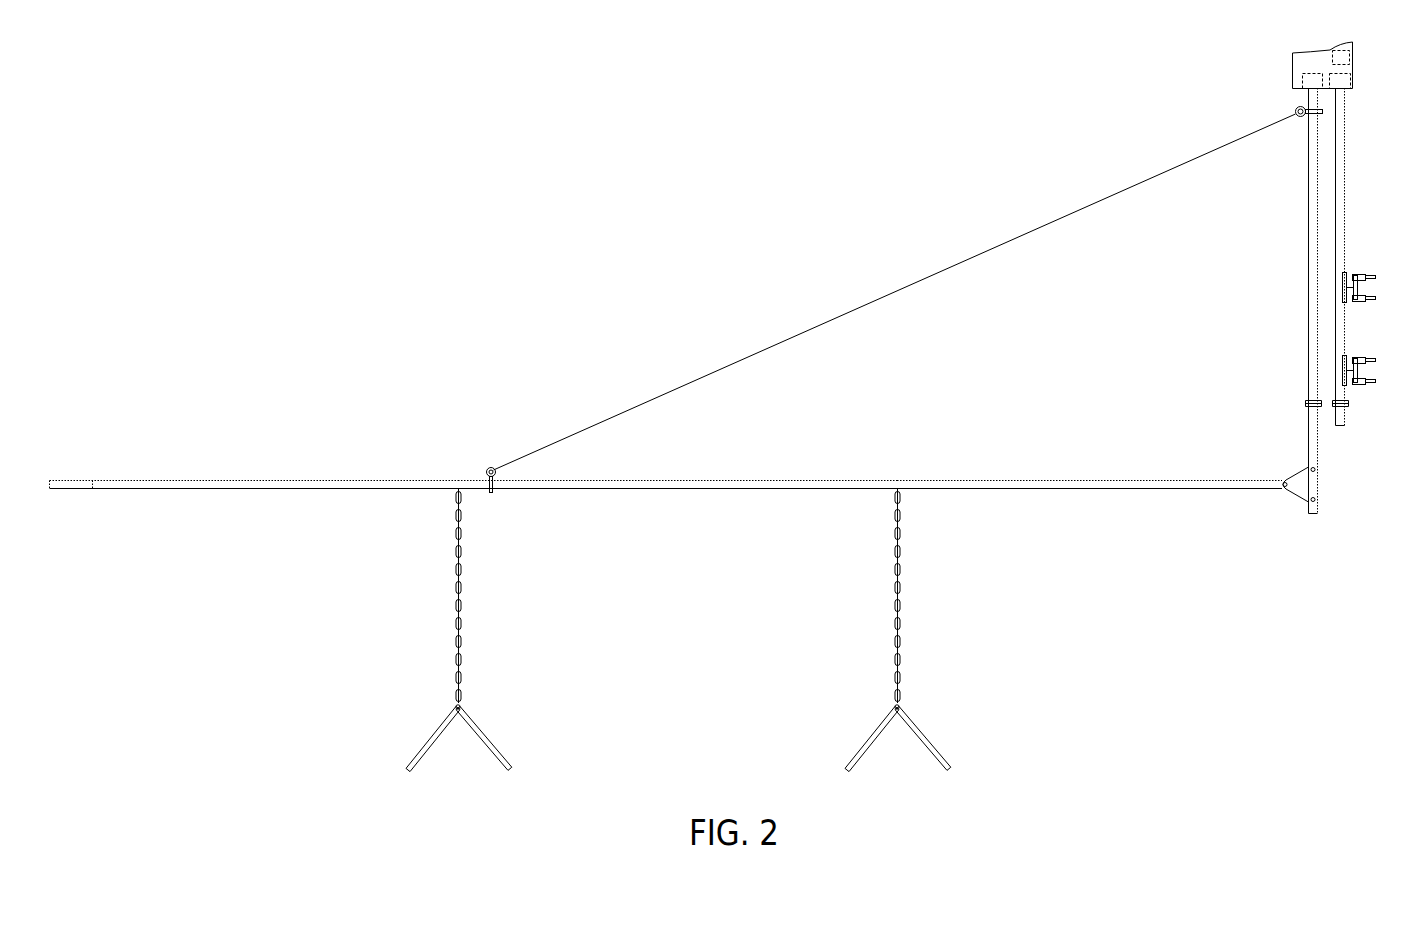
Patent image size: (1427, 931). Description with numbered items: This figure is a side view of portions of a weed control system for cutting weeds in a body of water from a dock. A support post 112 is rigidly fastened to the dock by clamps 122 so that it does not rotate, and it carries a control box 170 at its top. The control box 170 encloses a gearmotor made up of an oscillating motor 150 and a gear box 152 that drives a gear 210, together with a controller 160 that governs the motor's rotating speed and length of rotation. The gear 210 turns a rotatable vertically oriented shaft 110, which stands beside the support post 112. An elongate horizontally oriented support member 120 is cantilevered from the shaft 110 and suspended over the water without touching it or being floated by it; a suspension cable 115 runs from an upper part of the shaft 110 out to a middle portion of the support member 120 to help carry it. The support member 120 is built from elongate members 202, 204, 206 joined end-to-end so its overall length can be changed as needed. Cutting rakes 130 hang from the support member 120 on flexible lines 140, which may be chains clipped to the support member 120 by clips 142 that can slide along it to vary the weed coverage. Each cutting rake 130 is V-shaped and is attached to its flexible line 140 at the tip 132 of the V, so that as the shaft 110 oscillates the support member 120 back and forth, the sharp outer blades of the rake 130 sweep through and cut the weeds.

The vertically oriented shaft 110 is at (1308, 258).
The support post 112 is at (1347, 182).
The suspension cable 115 is at (868, 302).
The horizontally oriented support member 120 is at (666, 497).
The clamps 122 is at (1365, 275).
The cutting rake 130 is at (488, 738).
The tip 132 is at (456, 707).
The flexible line 140 is at (462, 592).
The clips 142 is at (458, 481).
The oscillating motor 150 is at (1352, 81).
The gear box 152 is at (1340, 90).
The controller 160 is at (1352, 56).
The control box 170 is at (1310, 62).
The elongate member 202 is at (293, 489).
The elongate member 204 is at (694, 489).
The elongate member 206 is at (1095, 489).
The gear 210 is at (1302, 83).